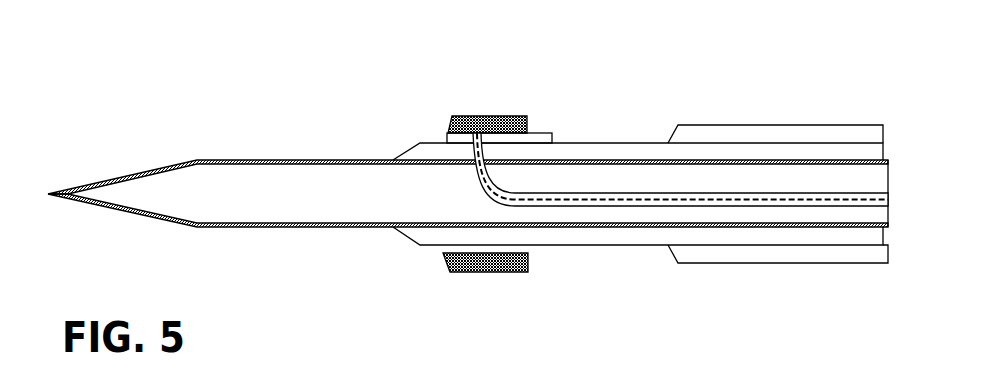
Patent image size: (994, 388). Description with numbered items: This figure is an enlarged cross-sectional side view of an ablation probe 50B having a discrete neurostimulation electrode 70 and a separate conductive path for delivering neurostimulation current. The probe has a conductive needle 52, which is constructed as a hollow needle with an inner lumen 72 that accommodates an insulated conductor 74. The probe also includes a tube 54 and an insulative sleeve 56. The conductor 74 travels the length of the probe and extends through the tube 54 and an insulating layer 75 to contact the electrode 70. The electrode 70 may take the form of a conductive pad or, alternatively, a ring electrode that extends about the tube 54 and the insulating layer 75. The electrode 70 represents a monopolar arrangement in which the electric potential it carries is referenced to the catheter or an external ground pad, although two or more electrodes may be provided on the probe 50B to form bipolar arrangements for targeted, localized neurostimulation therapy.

The ablation probe 50B is at (347, 60).
The conductive needle 52 is at (190, 160).
The inner lumen 72 is at (313, 195).
The tube 54 is at (570, 142).
The insulative sleeve 56 is at (725, 125).
The neurostimulation electrode 70 is at (477, 117).
The insulating layer 75 is at (438, 142).
The insulated conductor 74 is at (630, 200).